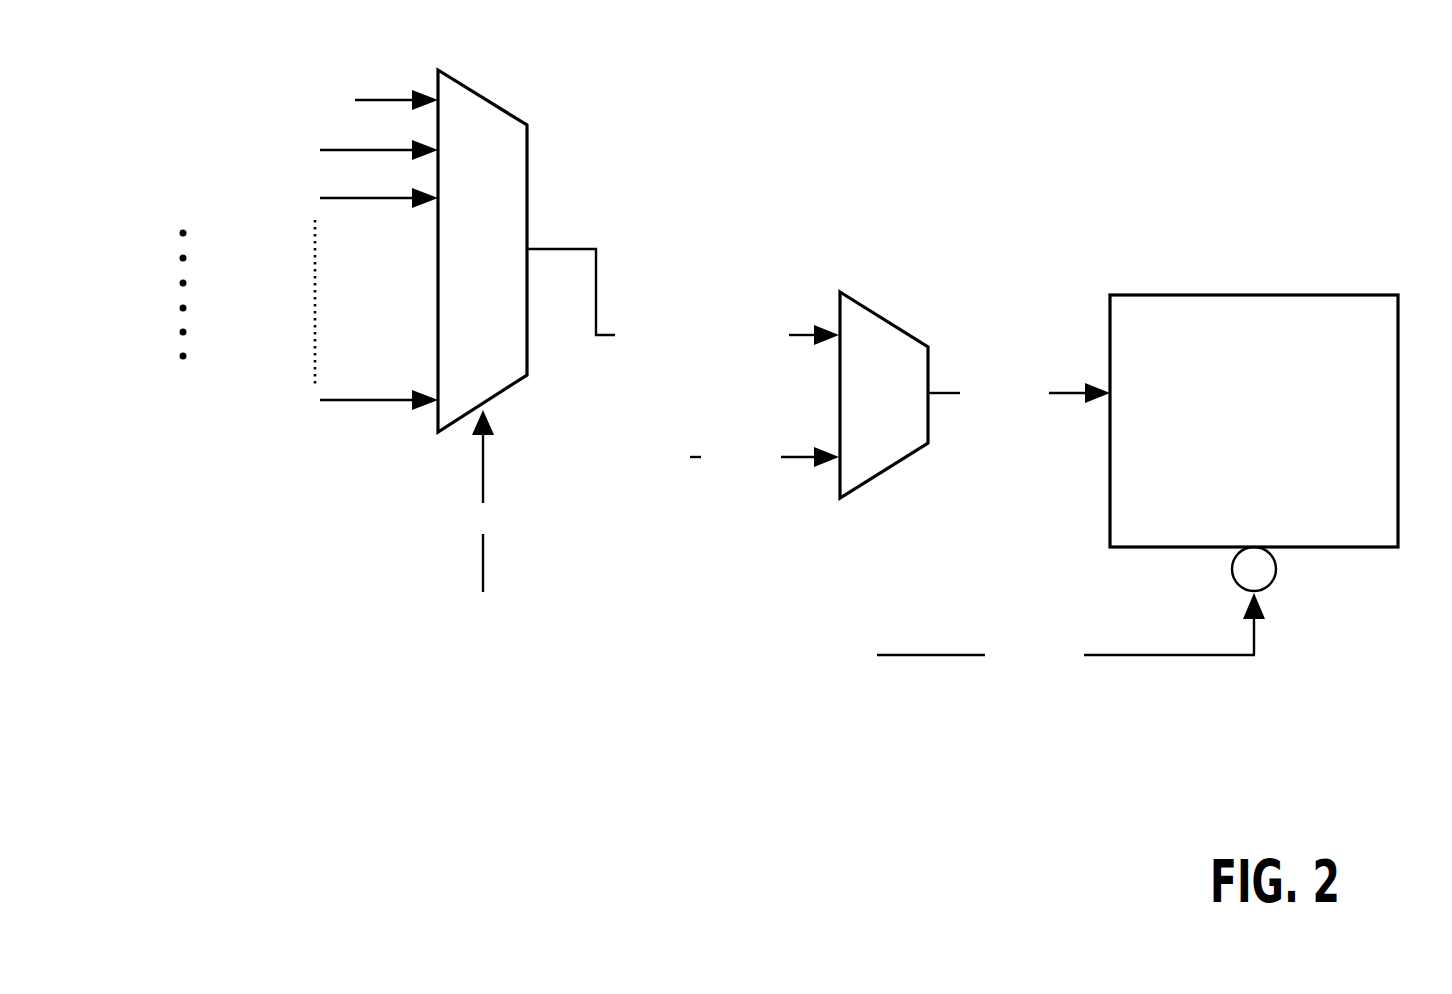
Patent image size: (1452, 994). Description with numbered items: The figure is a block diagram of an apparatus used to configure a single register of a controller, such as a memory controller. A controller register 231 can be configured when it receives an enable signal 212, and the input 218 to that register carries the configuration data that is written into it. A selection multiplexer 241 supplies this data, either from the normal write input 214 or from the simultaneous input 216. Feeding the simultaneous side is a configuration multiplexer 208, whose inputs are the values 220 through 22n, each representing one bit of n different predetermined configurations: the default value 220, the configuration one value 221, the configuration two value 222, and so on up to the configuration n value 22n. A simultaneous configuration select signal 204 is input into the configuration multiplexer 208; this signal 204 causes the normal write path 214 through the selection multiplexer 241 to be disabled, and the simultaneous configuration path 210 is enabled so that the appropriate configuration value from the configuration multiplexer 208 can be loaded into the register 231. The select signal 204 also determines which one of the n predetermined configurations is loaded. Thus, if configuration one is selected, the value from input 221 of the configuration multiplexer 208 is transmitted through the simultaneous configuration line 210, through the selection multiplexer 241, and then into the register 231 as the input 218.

The simultaneous configuration select signal 204 is at (481, 519).
The configuration multiplexer 208 is at (483, 95).
The simultaneous configuration path 210 is at (587, 292).
The enable signal 212 is at (1257, 655).
The write input 214 is at (758, 478).
The simultaneous input 216 is at (778, 320).
The input 218 is at (1032, 413).
The default configuration value 220 is at (240, 100).
The configuration 1 value 221 is at (240, 150).
The configuration 2 value 222 is at (240, 198).
The configuration n value 22n is at (240, 400).
The controller register 231 is at (1380, 295).
The selection multiplexer 241 is at (897, 327).